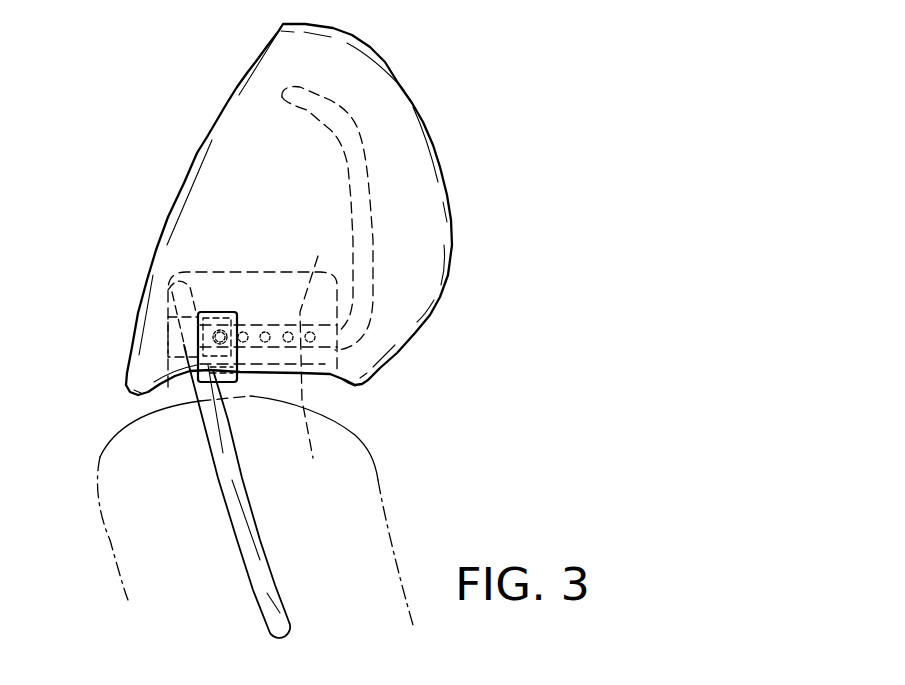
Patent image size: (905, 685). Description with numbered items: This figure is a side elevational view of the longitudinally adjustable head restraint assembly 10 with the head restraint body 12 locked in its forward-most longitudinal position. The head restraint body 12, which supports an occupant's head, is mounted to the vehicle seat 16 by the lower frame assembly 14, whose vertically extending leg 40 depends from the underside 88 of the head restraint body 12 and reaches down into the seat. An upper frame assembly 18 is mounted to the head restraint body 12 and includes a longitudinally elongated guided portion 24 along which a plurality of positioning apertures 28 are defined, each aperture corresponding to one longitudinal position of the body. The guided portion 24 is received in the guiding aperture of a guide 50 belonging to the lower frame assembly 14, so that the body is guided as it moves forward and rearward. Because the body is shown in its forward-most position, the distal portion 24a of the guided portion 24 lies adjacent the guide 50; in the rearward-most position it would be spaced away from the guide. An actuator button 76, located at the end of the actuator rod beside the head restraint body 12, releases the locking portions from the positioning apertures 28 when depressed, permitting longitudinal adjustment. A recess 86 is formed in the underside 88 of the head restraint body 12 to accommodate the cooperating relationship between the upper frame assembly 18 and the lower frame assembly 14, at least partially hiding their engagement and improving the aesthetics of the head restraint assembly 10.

The head restraint assembly 10 is at (470, 102).
The head restraint body 12 is at (438, 167).
The lower frame assembly 14 is at (243, 564).
The vehicle seat 16 is at (380, 488).
The upper frame assembly 18 is at (360, 128).
The guided portion 24 is at (314, 375).
The distal portion 24a is at (173, 328).
The positioning apertures 28 is at (268, 296).
The leg 40 is at (268, 584).
The guide 50 is at (188, 318).
The actuator button 76 is at (231, 365).
The recess 86 is at (262, 276).
The underside 88 is at (343, 383).